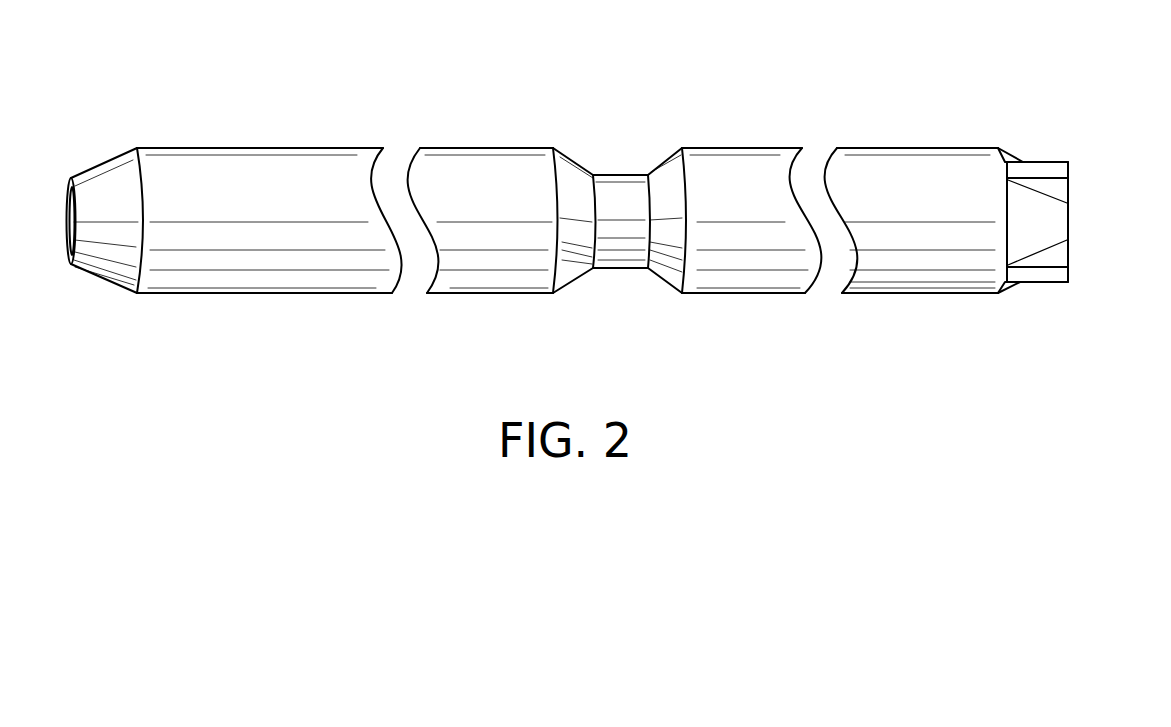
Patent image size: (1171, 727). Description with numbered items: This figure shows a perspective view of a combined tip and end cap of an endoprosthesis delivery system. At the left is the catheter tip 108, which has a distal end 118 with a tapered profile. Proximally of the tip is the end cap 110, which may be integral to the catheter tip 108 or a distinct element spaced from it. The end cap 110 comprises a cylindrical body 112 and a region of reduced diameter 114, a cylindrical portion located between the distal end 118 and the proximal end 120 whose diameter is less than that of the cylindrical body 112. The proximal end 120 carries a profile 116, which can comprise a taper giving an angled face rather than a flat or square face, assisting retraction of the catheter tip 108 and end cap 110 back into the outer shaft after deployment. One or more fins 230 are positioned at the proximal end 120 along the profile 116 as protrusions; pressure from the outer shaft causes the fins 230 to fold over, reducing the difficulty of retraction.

The catheter tip 108 is at (251, 148).
The end cap 110 is at (915, 148).
The cylindrical body 112 is at (732, 148).
The region of reduced diameter 114 is at (620, 175).
The profile 116 is at (1038, 222).
The distal end 118 is at (102, 158).
The proximal end 120 is at (1007, 288).
The fins 230 is at (1052, 170).